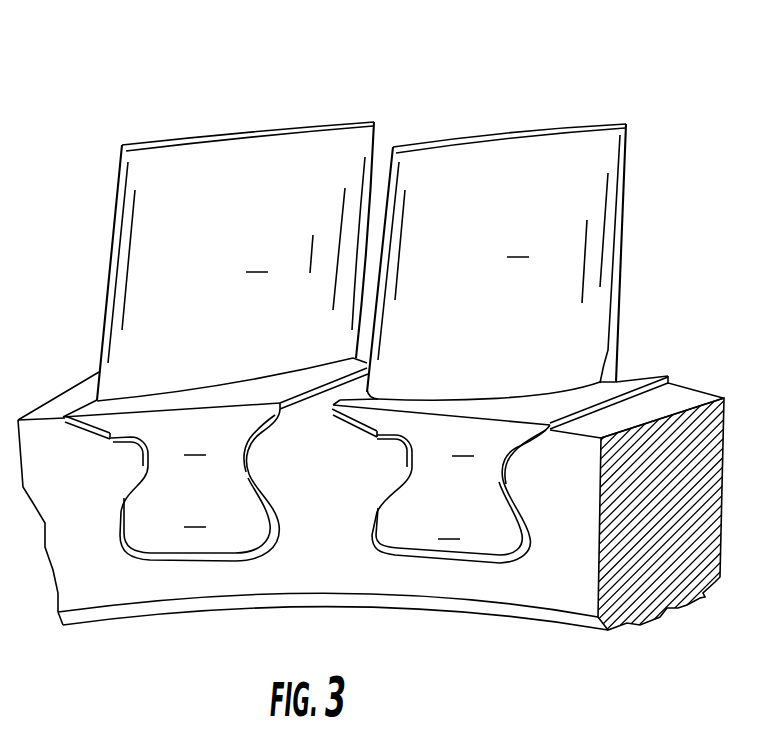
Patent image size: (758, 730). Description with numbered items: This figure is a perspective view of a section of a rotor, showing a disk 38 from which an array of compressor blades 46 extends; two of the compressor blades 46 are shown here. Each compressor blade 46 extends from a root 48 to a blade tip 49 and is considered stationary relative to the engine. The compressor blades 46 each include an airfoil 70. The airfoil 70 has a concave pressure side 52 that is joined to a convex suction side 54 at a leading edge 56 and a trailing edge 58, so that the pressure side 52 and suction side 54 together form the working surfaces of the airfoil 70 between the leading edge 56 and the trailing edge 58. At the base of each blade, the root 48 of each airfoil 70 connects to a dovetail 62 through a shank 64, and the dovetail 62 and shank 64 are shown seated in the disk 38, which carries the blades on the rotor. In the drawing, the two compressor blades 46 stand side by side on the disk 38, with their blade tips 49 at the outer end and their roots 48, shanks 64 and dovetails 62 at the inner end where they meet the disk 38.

The disk 38 is at (556, 590).
The compressor blade 46 is at (248, 110).
The root 48 is at (133, 397).
The blade tip 49 is at (459, 148).
The concave pressure side 52 is at (143, 208).
The convex suction side 54 is at (363, 225).
The leading edge 56 is at (111, 255).
The trailing edge 58 is at (378, 140).
The dovetail 62 is at (325, 514).
The shank 64 is at (330, 446).
The airfoil 70 is at (315, 158).